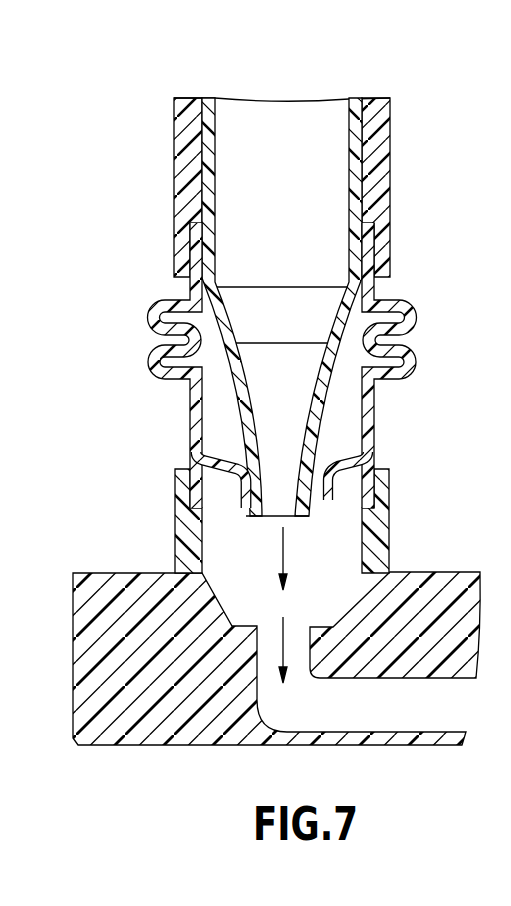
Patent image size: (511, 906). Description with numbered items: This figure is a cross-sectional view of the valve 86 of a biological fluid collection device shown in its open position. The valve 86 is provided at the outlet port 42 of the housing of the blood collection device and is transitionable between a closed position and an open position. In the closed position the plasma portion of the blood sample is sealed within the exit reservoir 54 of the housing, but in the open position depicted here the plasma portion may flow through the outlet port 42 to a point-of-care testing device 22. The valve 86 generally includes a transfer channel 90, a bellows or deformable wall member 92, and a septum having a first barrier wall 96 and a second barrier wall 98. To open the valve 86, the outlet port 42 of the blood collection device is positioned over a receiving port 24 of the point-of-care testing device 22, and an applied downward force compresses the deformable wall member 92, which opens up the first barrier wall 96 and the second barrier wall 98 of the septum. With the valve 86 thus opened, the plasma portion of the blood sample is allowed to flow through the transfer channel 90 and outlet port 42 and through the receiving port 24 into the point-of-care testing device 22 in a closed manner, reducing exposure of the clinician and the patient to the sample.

The point-of-care testing device 22 is at (107, 572).
The receiving port 24 is at (310, 588).
The outlet port 42 is at (173, 527).
The exit reservoir 54 is at (285, 142).
The valve 86 is at (145, 340).
The transfer channel 90 is at (323, 420).
The deformable wall member 92 is at (417, 323).
The first barrier wall 96 is at (245, 508).
The second barrier wall 98 is at (325, 497).